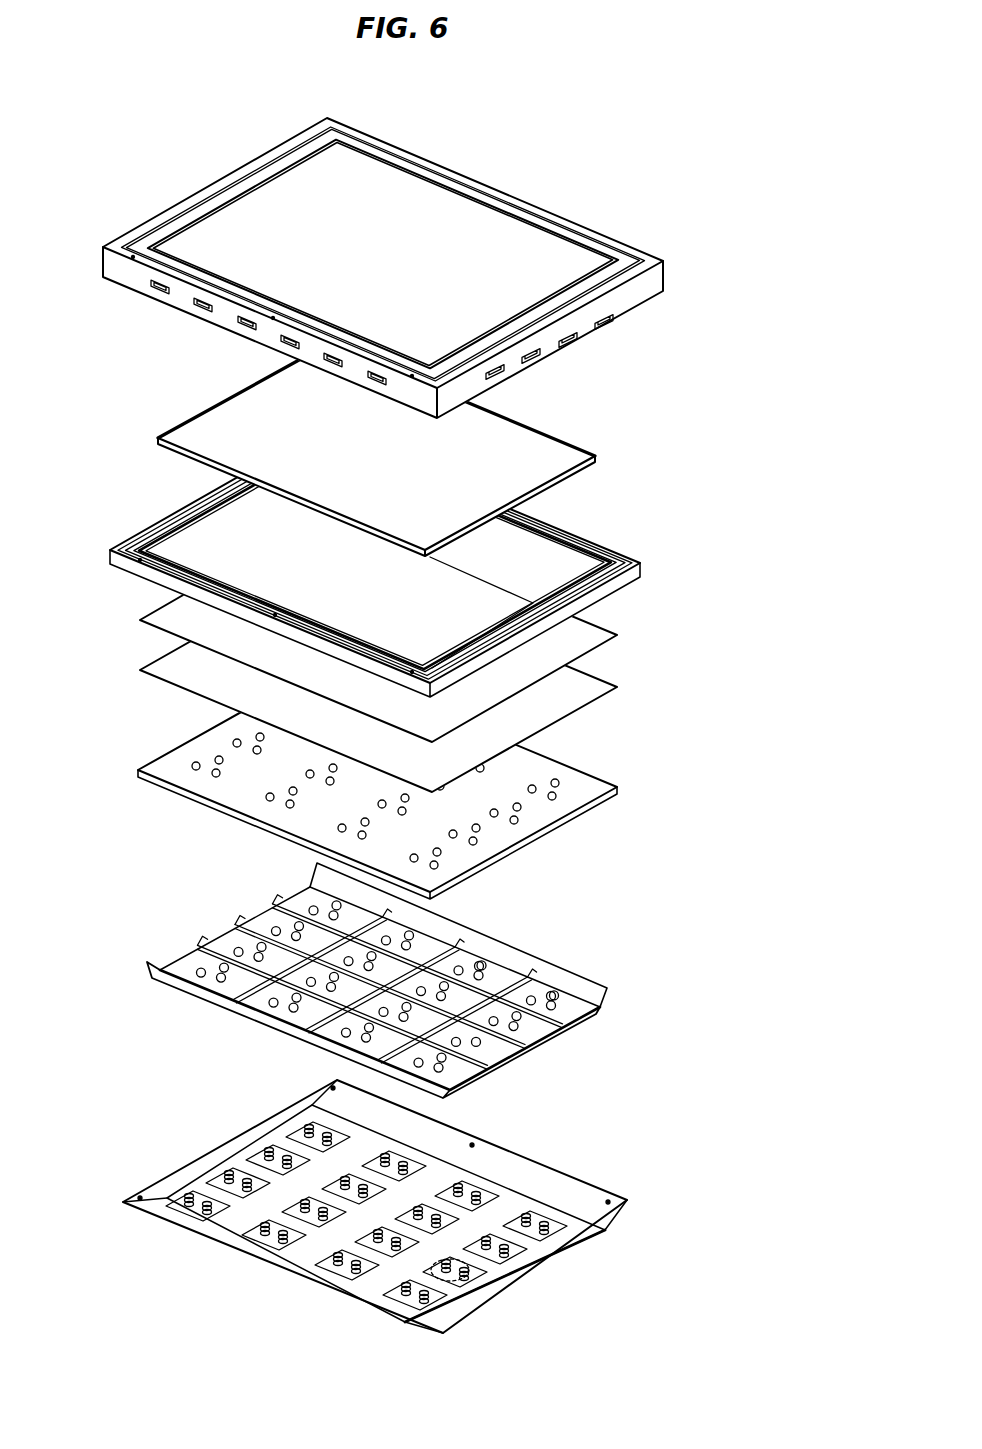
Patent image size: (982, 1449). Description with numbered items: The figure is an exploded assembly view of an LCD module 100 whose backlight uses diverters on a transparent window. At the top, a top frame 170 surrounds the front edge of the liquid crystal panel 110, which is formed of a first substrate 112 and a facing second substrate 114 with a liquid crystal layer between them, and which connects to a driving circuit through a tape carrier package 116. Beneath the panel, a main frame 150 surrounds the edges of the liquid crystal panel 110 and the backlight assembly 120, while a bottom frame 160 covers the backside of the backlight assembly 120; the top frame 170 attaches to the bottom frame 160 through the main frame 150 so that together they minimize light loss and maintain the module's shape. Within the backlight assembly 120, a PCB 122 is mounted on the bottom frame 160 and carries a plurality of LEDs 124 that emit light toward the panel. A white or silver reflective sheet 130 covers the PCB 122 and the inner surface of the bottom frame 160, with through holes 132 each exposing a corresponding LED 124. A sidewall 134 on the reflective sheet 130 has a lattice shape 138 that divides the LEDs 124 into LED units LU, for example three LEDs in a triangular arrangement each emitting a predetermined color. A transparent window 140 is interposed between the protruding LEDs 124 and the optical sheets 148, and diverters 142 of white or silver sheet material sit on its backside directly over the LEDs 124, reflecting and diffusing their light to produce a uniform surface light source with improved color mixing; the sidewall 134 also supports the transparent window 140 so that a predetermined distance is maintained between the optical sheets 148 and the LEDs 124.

The LCD module 100 is at (558, 160).
The liquid crystal panel 110 is at (509, 449).
The first substrate 112 is at (173, 452).
The second substrate 114 is at (185, 432).
The tape carrier package 116 is at (490, 406).
The backlight assembly 120 is at (709, 686).
The PCB 122 is at (556, 1226).
The LEDs 124 is at (540, 1216).
The reflective sheet 130 is at (540, 1045).
The through holes 132 is at (555, 995).
The sidewall 134 is at (460, 999).
The lattice shape 138 is at (482, 965).
The transparent window 140 is at (582, 808).
The diverters 142 is at (514, 822).
The optical sheets 148 is at (641, 633).
The main frame 150 is at (640, 563).
The bottom frame 160 is at (547, 1257).
The top frame 170 is at (663, 280).
The LED unit LU is at (487, 1277).